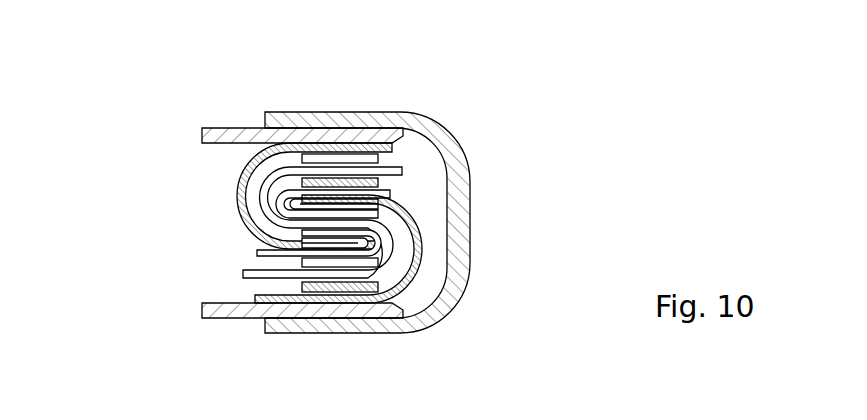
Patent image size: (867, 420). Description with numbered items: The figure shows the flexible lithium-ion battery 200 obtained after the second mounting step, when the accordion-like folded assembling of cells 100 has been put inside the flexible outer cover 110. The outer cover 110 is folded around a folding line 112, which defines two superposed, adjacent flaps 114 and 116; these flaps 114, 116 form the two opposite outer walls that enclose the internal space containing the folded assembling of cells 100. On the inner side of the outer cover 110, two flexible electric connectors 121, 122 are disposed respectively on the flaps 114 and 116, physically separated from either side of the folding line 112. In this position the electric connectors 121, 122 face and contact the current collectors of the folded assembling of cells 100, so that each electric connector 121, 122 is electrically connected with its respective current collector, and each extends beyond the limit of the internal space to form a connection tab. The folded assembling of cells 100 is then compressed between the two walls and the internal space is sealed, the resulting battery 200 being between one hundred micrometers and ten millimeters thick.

The assembling of cells 100 is at (181, 193).
The flexible outer cover 110 is at (458, 295).
The folding line 112 is at (454, 228).
The flap 114 is at (352, 118).
The flap 116 is at (354, 331).
The electric connector 121 is at (283, 133).
The electric connector 122 is at (284, 306).
The flexible lithium-ion battery 200 is at (500, 113).